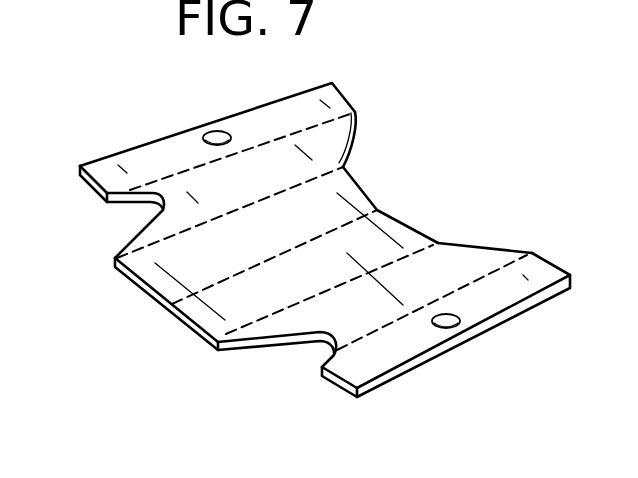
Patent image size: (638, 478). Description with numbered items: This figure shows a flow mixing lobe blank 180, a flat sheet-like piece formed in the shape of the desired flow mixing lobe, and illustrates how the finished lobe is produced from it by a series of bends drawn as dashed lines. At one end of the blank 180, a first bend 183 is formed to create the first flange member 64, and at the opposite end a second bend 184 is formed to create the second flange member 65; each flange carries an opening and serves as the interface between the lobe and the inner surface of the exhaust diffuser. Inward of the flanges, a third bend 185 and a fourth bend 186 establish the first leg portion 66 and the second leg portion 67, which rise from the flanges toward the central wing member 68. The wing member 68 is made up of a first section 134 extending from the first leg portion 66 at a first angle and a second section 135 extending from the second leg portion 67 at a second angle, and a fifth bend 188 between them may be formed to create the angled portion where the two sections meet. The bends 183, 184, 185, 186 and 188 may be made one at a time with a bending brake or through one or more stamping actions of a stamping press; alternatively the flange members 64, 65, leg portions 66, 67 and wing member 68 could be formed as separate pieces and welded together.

The flow mixing lobe blank 180 is at (204, 376).
The first flange member 64 is at (162, 150).
The second flange member 65 is at (392, 361).
The first leg portion 66 is at (280, 164).
The second leg portion 67 is at (441, 268).
The wing member 68 is at (412, 210).
The first section 134 is at (220, 267).
The second section 135 is at (308, 295).
The first bend 183 is at (290, 132).
The second bend 184 is at (493, 273).
The third bend 185 is at (232, 208).
The fourth bend 186 is at (349, 286).
The fifth bend 188 is at (208, 289).